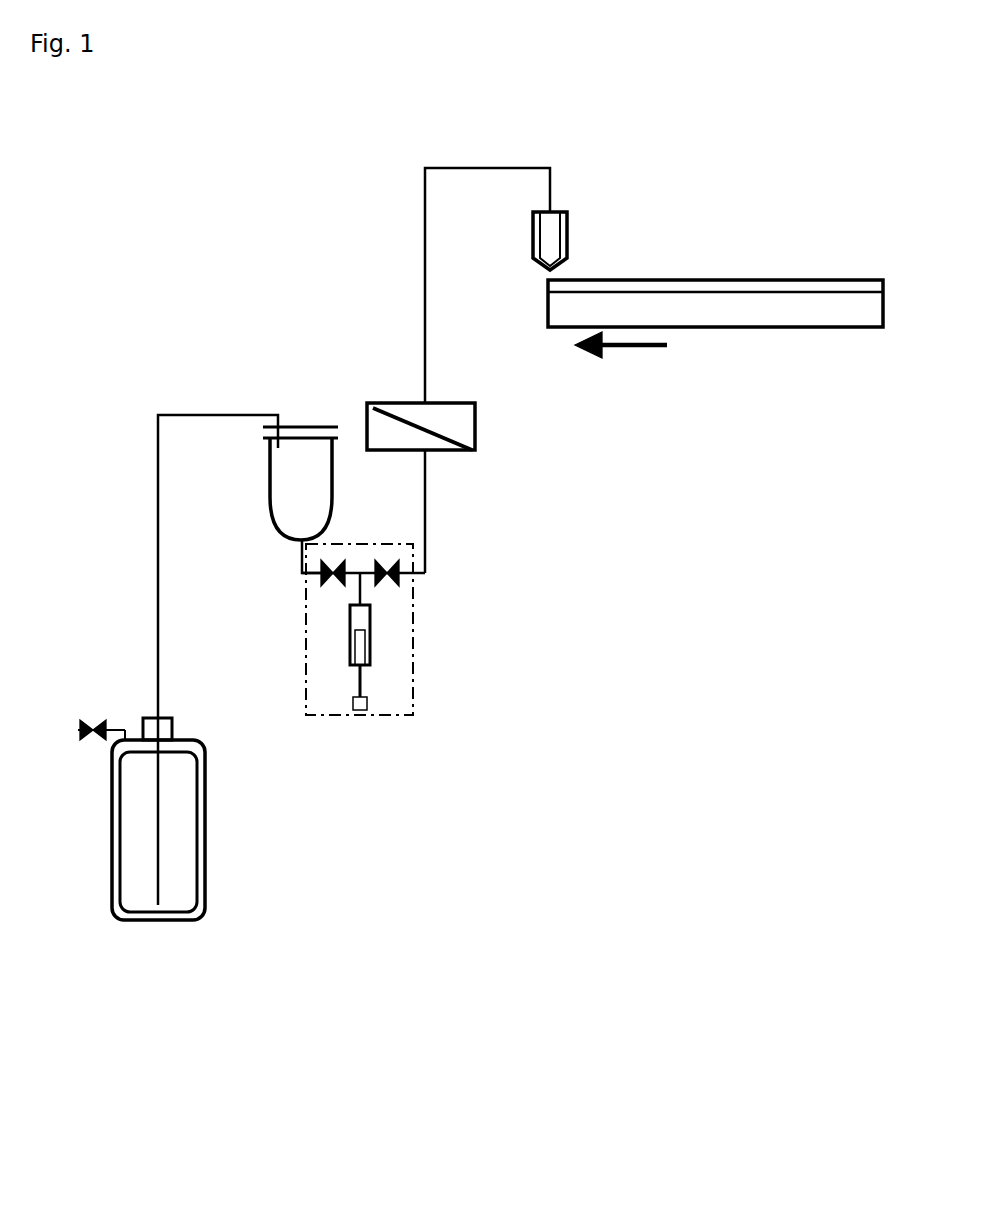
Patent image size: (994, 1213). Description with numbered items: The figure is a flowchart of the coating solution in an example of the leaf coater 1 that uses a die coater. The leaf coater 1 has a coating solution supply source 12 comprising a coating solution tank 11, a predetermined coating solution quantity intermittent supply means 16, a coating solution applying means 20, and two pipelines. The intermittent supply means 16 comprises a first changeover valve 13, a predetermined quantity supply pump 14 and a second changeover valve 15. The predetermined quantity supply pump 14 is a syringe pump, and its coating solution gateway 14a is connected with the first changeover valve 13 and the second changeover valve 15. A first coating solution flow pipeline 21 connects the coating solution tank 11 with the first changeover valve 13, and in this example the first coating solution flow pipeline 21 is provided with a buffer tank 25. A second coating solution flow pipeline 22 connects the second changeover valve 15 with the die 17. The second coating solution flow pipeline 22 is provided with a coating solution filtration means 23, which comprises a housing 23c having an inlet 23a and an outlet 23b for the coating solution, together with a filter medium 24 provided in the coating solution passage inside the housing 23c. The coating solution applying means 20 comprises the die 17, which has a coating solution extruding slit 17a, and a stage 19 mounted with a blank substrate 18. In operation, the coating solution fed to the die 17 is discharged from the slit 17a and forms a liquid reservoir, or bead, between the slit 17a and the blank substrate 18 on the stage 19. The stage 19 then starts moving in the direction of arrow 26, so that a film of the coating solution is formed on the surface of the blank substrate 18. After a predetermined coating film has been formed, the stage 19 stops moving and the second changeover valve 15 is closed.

The leaf coater 1 is at (270, 292).
The coating solution tank 11 is at (147, 918).
The coating solution supply source 12 is at (203, 878).
The first changeover valve 13 is at (323, 585).
The predetermined quantity supply pump 14 is at (362, 622).
The coating solution gateway 14a is at (362, 577).
The second changeover valve 15 is at (400, 585).
The predetermined coating solution quantity intermittent supply means 16 is at (345, 717).
The die 17 is at (560, 212).
The coating solution extruding slit 17a is at (540, 262).
The blank substrate 18 is at (667, 278).
The stage 19 is at (693, 330).
The coating solution applying means 20 is at (733, 302).
The first coating solution flow pipeline 21 is at (160, 568).
The second coating solution flow pipeline 22 is at (415, 198).
The coating solution filtration means 23 is at (470, 450).
The inlet 23a is at (428, 453).
The outlet 23b is at (413, 398).
The housing 23c is at (480, 423).
The filter medium 24 is at (425, 423).
The buffer tank 25 is at (307, 423).
The arrow 26 is at (628, 347).